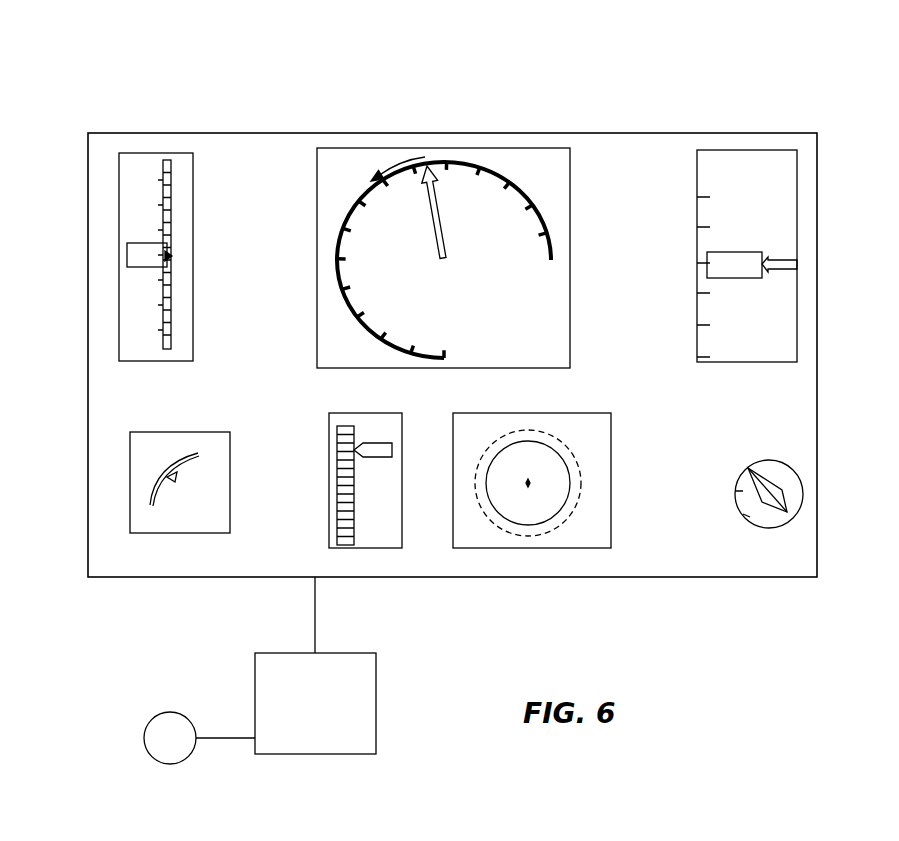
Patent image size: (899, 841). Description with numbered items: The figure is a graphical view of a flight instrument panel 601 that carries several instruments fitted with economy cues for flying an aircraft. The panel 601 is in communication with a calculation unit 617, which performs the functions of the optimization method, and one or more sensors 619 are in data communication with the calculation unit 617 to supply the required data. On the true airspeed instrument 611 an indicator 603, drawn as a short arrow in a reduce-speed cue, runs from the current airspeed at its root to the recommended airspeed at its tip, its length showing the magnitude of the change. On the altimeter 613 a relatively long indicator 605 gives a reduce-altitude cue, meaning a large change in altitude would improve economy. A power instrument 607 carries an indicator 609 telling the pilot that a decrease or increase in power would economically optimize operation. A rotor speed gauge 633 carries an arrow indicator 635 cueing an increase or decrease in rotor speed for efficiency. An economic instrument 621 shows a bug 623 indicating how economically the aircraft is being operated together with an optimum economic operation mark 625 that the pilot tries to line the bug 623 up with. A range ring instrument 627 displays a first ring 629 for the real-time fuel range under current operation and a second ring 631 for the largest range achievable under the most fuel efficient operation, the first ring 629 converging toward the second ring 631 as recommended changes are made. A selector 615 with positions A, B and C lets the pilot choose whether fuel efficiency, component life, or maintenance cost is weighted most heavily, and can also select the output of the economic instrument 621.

The instrument panel 601 is at (208, 92).
The indicator 603 is at (178, 258).
The indicator 605 is at (690, 297).
The power instrument 607 is at (521, 148).
The indicator 609 is at (390, 168).
The true airspeed instrument 611 is at (193, 178).
The altimeter 613 is at (697, 192).
The selector 615 is at (776, 558).
The calculation unit 617 is at (317, 754).
The sensors 619 is at (147, 752).
The economic instrument 621 is at (130, 455).
The bug 623 is at (176, 477).
The optimum economic operation mark 625 is at (170, 438).
The range ring instrument 627 is at (520, 548).
The first ring 629 is at (575, 496).
The second ring 631 is at (580, 468).
The rotor speed gauge 633 is at (363, 548).
The indicator 635 is at (377, 463).